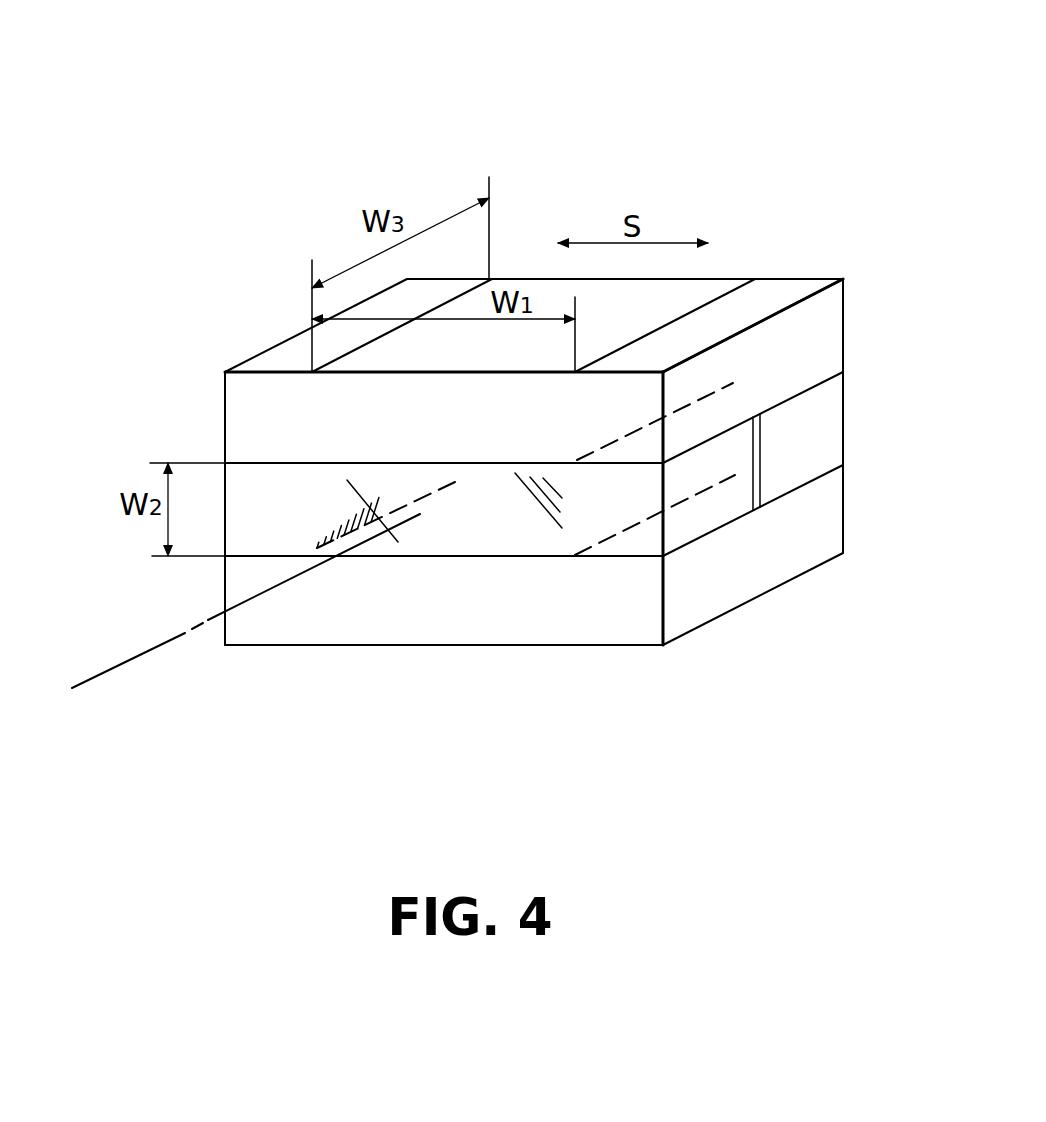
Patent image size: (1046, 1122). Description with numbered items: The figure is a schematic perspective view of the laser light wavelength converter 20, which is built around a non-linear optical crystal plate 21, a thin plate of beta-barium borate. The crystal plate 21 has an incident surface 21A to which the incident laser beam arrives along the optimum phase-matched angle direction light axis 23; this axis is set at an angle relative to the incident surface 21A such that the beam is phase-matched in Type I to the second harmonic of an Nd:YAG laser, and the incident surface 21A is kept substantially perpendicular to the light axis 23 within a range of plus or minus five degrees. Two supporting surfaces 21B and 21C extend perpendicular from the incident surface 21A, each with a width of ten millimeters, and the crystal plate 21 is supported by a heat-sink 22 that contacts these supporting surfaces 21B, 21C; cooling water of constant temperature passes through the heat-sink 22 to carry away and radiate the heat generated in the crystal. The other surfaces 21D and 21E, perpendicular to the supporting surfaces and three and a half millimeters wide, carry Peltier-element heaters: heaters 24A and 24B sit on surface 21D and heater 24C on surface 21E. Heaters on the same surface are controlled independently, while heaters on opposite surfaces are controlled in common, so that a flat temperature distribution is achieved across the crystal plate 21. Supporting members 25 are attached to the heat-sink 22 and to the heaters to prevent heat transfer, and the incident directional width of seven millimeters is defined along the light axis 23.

The laser light wavelength converter 20 is at (648, 153).
The non-linear optical crystal plate 21 is at (430, 538).
The incident surface 21A is at (535, 523).
The supporting surface 21B is at (423, 462).
The supporting surface 21C is at (500, 557).
The surface 21D is at (578, 520).
The surface 21E is at (308, 535).
The heat-sink 22 is at (703, 293).
The optimum phase-matched angle direction light axis 23 is at (128, 662).
The heater 24A is at (723, 507).
The heater 24B is at (818, 432).
The heater 24C is at (253, 487).
The supporting member 25 is at (240, 405).